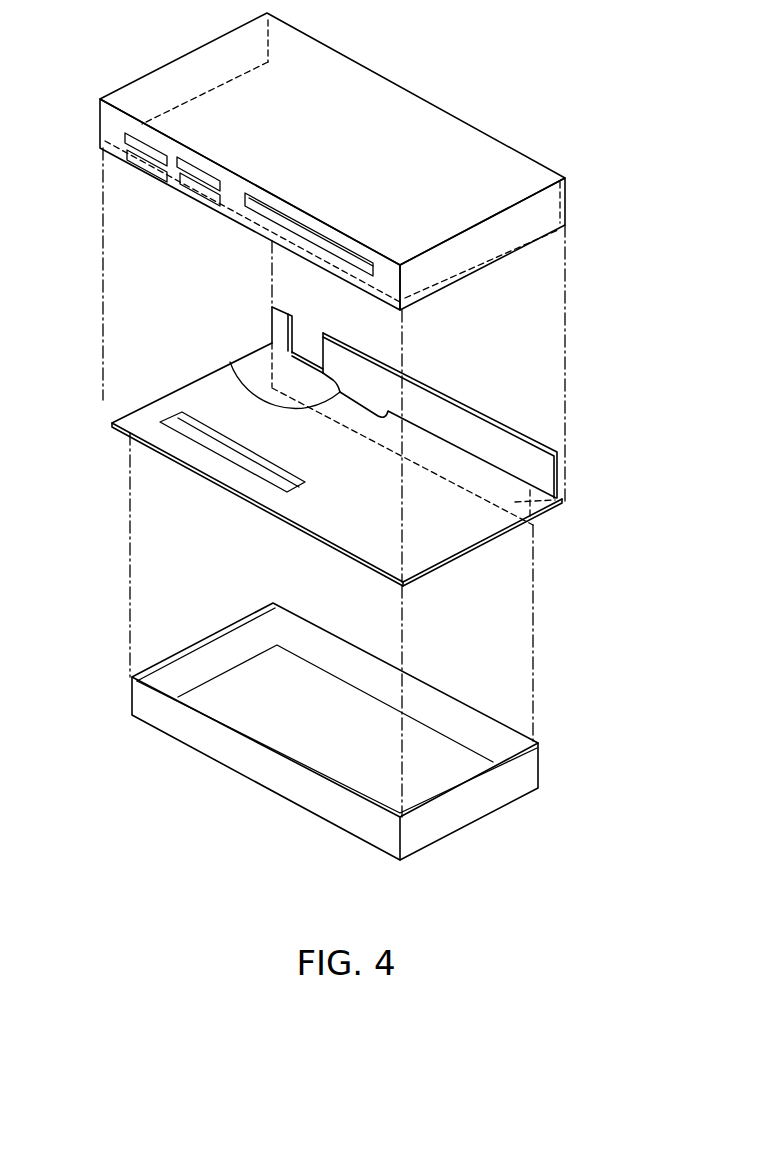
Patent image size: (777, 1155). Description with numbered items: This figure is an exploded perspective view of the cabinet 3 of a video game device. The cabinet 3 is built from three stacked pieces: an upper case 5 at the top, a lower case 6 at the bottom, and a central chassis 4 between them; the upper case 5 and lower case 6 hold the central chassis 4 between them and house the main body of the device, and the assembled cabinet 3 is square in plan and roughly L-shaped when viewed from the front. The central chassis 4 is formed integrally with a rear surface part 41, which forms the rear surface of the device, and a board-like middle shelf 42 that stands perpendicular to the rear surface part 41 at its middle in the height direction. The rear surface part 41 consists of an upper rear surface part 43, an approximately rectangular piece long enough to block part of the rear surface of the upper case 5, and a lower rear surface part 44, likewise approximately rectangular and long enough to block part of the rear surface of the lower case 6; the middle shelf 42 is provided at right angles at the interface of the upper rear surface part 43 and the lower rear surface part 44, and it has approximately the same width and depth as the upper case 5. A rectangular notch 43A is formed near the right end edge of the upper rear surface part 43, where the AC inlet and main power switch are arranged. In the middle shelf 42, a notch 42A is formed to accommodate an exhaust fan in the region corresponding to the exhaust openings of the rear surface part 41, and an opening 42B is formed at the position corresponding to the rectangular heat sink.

The cabinet 3 is at (99, 74).
The central chassis 4 is at (170, 400).
The upper case 5 is at (188, 68).
The lower case 6 is at (205, 740).
The rear surface part 41 is at (618, 422).
The middle shelf 42 is at (465, 528).
The notch 42A is at (255, 397).
The opening 42B is at (225, 452).
The upper rear surface part 43 is at (546, 456).
The rectangular notch 43A is at (293, 329).
The lower rear surface part 44 is at (563, 500).